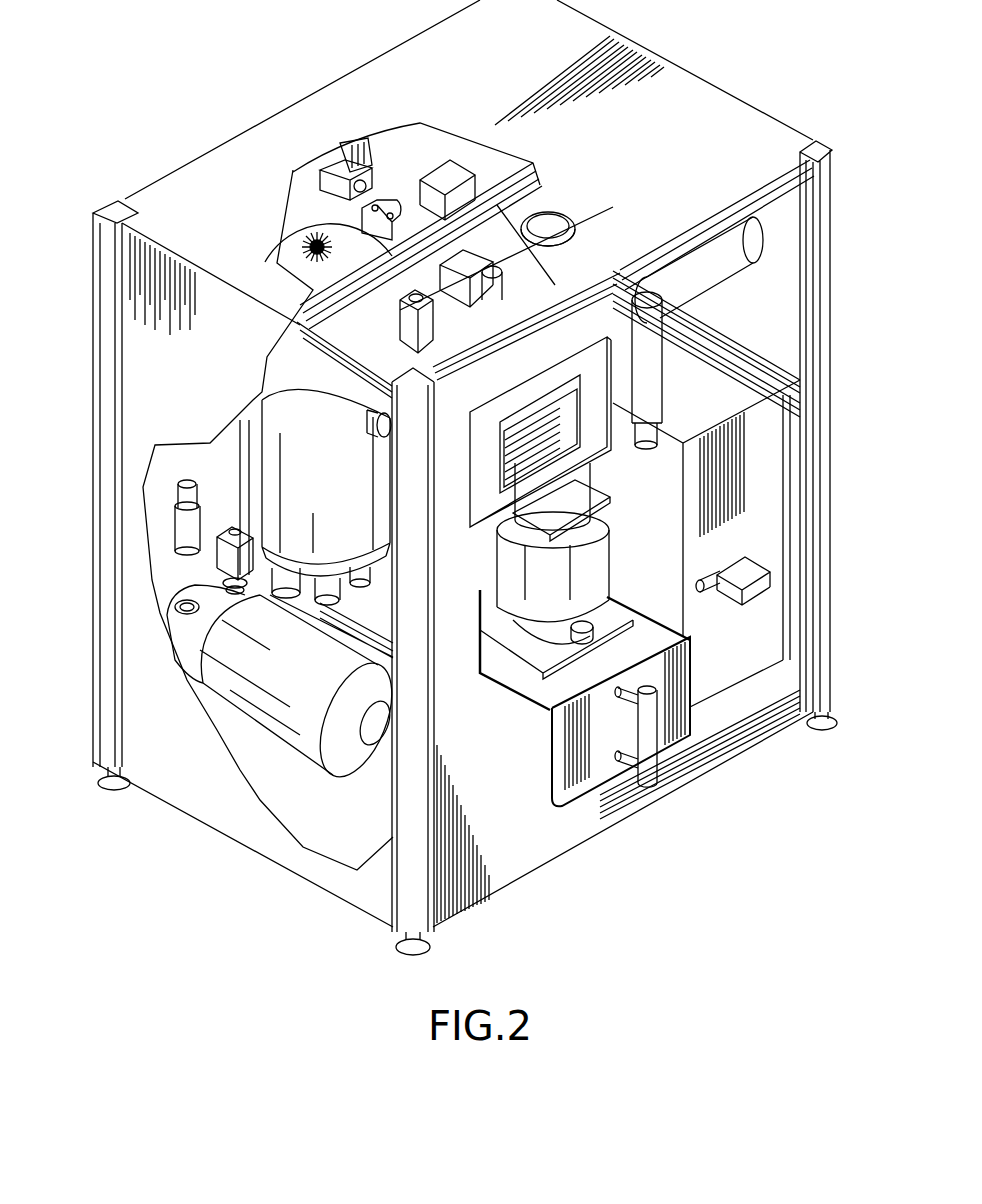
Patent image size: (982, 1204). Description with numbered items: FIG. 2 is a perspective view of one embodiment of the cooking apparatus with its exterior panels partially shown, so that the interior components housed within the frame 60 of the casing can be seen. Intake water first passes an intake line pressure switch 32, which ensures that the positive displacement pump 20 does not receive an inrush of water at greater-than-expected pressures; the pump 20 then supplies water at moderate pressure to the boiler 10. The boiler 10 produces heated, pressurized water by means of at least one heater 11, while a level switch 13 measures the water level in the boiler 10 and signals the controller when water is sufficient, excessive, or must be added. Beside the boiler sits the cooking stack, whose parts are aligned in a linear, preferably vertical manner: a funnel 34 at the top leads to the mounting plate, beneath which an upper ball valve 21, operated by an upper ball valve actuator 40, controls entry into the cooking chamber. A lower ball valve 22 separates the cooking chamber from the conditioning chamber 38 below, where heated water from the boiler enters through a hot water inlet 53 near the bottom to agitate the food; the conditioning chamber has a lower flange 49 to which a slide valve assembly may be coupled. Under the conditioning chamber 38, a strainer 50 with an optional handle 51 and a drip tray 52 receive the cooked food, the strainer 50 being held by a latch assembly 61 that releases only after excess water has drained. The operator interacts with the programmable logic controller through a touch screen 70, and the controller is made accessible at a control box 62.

The boiler 10 is at (257, 468).
The heater 11 is at (320, 596).
The level switch 13 is at (267, 392).
The positive displacement pump 20 is at (293, 727).
The upper ball valve 21 is at (540, 283).
The lower ball valve 22 is at (580, 482).
The intake line pressure switch 32 is at (183, 527).
The funnel 34 is at (570, 213).
The conditioning chamber 38 is at (598, 573).
The upper ball valve actuator 40 is at (650, 390).
The lower flange 49 is at (545, 702).
The strainer 50 is at (537, 870).
The handle 51 is at (643, 783).
The drip tray 52 is at (672, 755).
The hot water inlet 53 is at (582, 640).
The frame 60 is at (725, 758).
The latch assembly 61 is at (747, 600).
The control box 62 is at (733, 677).
The touch screen 70 is at (550, 385).